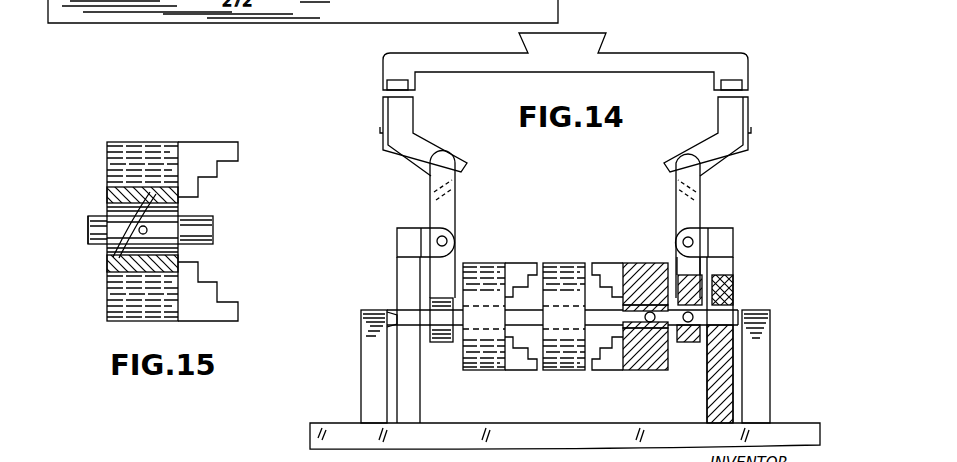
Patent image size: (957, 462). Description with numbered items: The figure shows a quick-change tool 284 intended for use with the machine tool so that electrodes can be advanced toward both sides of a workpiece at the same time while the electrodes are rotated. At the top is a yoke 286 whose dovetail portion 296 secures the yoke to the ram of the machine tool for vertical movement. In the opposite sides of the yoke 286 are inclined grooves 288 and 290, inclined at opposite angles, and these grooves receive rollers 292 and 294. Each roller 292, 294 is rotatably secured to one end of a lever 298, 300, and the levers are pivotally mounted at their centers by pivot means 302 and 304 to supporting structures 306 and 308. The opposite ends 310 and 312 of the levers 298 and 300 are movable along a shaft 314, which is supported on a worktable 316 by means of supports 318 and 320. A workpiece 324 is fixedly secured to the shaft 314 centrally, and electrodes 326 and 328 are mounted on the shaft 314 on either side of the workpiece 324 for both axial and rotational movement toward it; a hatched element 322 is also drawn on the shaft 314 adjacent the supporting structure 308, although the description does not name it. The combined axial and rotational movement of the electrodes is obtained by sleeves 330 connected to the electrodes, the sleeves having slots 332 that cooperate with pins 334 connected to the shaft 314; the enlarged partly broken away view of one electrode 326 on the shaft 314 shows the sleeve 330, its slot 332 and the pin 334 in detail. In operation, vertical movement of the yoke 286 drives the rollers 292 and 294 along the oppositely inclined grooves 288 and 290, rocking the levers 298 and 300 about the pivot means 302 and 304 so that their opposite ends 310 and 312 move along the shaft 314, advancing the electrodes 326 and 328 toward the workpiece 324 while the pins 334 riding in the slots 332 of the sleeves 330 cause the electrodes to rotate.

In FIG. 14, the quick-change tool 284 is at (258, 441).
In FIG. 14, the yoke 286 is at (752, 118).
In FIG. 14, the inclined groove 288 is at (418, 150).
In FIG. 14, the inclined groove 290 is at (722, 155).
In FIG. 14, the roller 292 is at (458, 182).
In FIG. 14, the roller 294 is at (668, 171).
In FIG. 14, the dovetail portion 296 is at (615, 43).
In FIG. 14, the lever 298 is at (430, 200).
In FIG. 14, the lever 300 is at (702, 213).
In FIG. 14, the pivot means 302 is at (448, 238).
In FIG. 14, the pivot means 304 is at (683, 238).
In FIG. 14, the supporting structure 306 is at (421, 396).
In FIG. 14, the supporting structure 308 is at (708, 392).
In FIG. 14, the opposite end of lever 310 is at (438, 343).
In FIG. 14, the opposite end of lever 312 is at (690, 343).
In FIG. 14, the shaft 314 is at (736, 310).
In FIG. 15, the shaft 314 is at (90, 226).
In FIG. 14, the worktable 316 is at (549, 422).
In FIG. 14, the support 318 is at (362, 339).
In FIG. 14, the support 320 is at (771, 394).
In FIG. 14, the bushing 322 is at (736, 281).
In FIG. 14, the workpiece 324 is at (566, 351).
In FIG. 14, the electrode 326 is at (525, 262).
In FIG. 15, the electrode 326 is at (152, 142).
In FIG. 14, the electrode 328 is at (636, 262).
In FIG. 15, the sleeve 330 is at (100, 246).
In FIG. 15, the slot 332 is at (175, 212).
In FIG. 15, the pin 334 is at (125, 200).